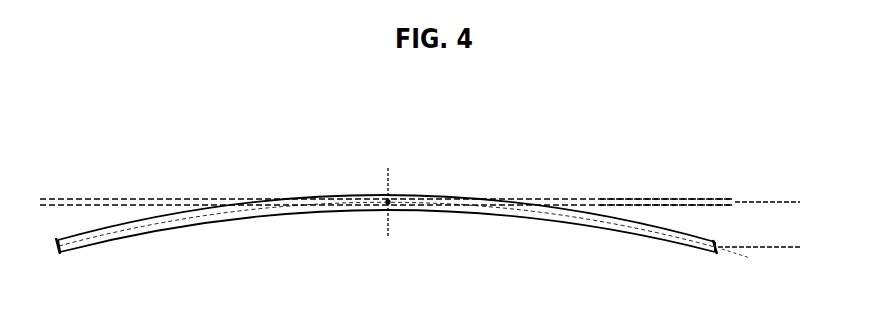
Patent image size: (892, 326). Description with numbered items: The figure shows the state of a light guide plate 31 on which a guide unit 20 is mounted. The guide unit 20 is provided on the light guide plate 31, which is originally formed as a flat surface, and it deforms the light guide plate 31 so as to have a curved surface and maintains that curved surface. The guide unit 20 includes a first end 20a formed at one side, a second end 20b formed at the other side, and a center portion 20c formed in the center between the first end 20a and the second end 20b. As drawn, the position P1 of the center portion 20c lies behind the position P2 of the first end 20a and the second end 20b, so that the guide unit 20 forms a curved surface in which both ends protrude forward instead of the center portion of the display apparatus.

The guide unit 20 is at (550, 216).
The first end 20a is at (58, 248).
The second end 20b is at (716, 252).
The center portion 20c is at (391, 199).
The light guide plate 31 is at (679, 199).
The position of the center portion P1 is at (430, 203).
The position of the first end and the second end P2 is at (769, 248).